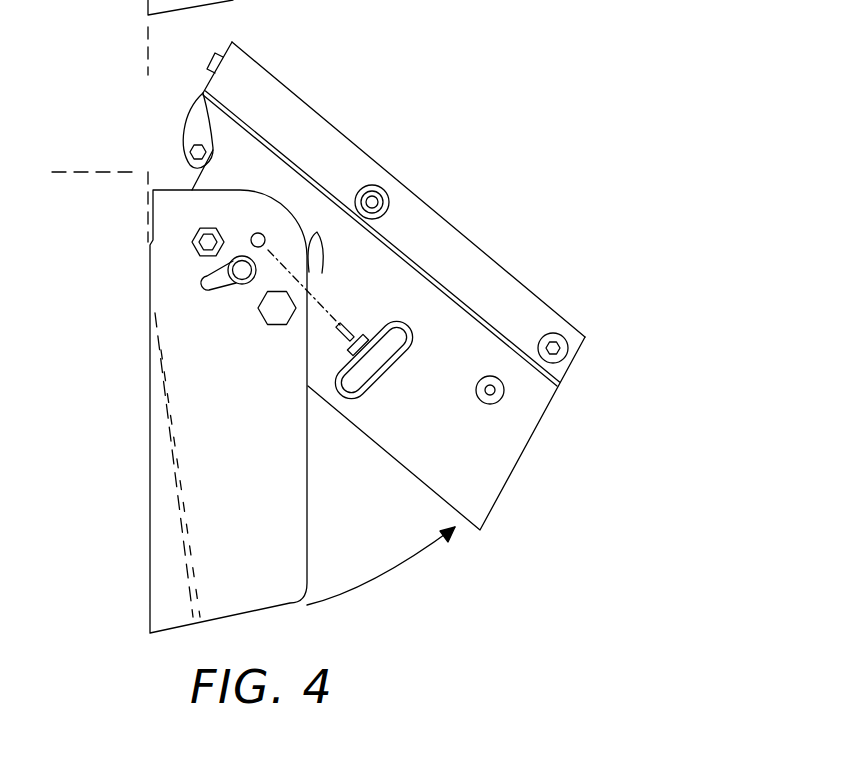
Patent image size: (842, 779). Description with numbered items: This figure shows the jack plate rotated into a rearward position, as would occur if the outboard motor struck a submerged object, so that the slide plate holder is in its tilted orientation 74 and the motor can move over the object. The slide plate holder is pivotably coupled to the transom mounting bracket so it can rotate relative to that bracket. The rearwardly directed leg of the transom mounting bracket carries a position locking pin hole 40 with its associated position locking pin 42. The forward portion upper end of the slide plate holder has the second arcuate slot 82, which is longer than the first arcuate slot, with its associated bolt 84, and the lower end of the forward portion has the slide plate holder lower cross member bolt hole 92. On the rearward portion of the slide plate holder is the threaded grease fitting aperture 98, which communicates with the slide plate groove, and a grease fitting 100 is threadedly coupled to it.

The position locking pin hole 40 is at (265, 236).
The position locking pin 42 is at (414, 330).
The tilted orientation 74 is at (500, 536).
The second arcuate slot 82 is at (320, 237).
The bolt 84 is at (257, 311).
The slide plate holder lower cross member bolt hole 92 is at (503, 396).
The threaded grease fitting aperture 98 is at (386, 192).
The grease fitting 100 is at (377, 188).